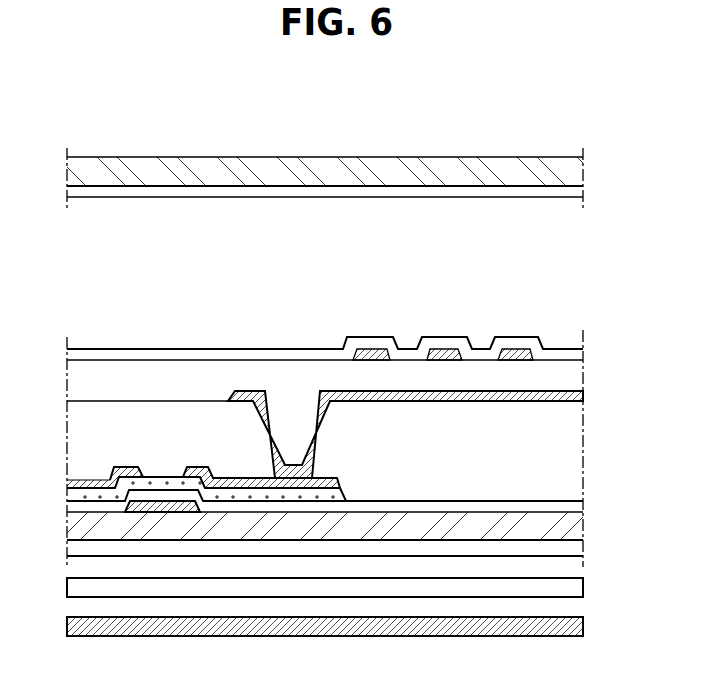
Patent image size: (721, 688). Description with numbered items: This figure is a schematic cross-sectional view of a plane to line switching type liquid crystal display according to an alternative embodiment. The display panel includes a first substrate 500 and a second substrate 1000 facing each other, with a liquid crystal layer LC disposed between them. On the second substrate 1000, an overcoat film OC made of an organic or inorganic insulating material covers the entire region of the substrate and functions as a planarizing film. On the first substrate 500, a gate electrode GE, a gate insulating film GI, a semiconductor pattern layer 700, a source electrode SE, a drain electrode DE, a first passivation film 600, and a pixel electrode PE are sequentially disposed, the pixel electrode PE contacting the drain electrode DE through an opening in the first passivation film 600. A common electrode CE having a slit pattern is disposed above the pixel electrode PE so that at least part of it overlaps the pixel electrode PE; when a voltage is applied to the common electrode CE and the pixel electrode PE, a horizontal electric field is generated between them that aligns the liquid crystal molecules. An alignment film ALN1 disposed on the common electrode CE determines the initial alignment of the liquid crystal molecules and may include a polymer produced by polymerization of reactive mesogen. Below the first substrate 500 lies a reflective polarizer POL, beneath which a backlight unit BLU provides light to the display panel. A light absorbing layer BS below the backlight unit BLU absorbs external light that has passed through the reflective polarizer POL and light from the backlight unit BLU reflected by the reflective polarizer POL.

The second substrate 1000 is at (550, 165).
The overcoat film OC is at (572, 187).
The liquid crystal layer LC is at (325, 272).
The alignment film ALN1 is at (572, 354).
The common electrode CE is at (515, 352).
The first passivation film 600 is at (572, 371).
The pixel electrode PE is at (572, 395).
The gate electrode GE is at (165, 507).
The drain electrode DE is at (253, 482).
The source electrode SE is at (90, 482).
The semiconductor pattern layer 700 is at (82, 498).
The gate insulating film GI is at (572, 506).
The first substrate 500 is at (82, 528).
The reflective polarizer POL is at (577, 547).
The backlight unit BLU is at (577, 588).
The light absorbing layer BS is at (577, 627).